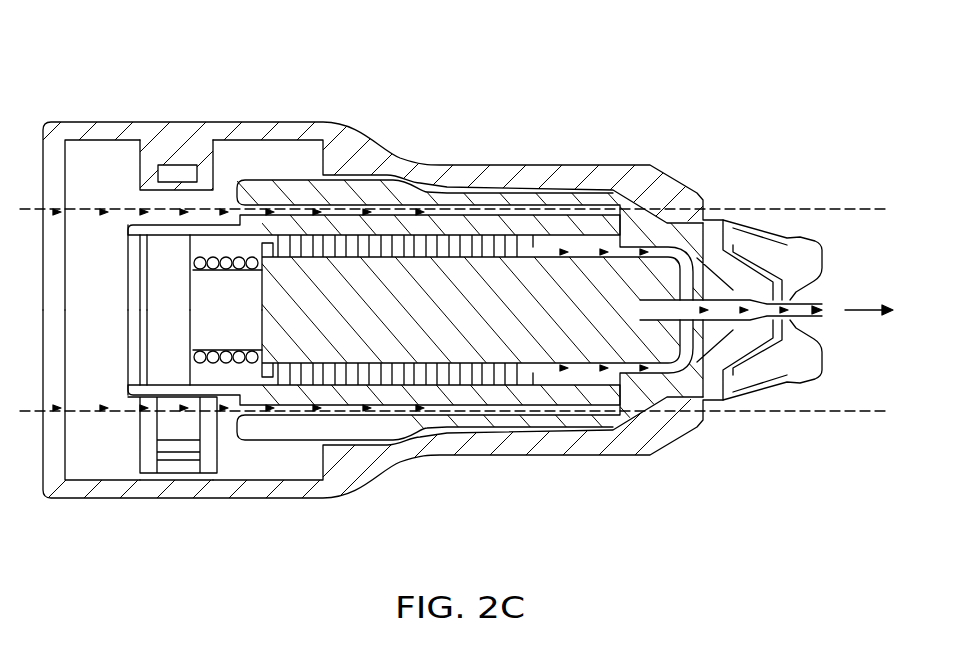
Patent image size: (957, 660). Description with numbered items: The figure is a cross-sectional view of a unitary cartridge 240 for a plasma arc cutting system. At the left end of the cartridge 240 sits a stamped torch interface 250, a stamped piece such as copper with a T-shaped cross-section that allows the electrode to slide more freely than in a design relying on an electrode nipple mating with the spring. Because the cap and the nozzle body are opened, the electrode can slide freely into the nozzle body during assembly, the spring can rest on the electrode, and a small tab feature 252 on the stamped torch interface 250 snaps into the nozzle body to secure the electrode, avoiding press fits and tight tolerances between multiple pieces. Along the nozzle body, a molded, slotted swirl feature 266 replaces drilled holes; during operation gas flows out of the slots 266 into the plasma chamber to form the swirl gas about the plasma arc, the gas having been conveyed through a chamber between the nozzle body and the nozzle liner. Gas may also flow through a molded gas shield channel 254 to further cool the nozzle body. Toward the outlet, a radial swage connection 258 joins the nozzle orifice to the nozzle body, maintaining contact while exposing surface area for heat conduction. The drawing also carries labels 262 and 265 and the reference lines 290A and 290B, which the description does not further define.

The unitary cartridge 240 is at (217, 97).
The stamped torch interface 250 is at (160, 380).
The tab feature 252 is at (147, 400).
The molded gas shield channel 254 is at (585, 445).
The radial swage connection 258 is at (665, 452).
The nozzle cap 262 is at (668, 180).
The inlet 265 is at (94, 208).
The slotted swirl feature 266 is at (490, 207).
The lower plane 290A is at (864, 413).
The upper plane 290B is at (864, 211).